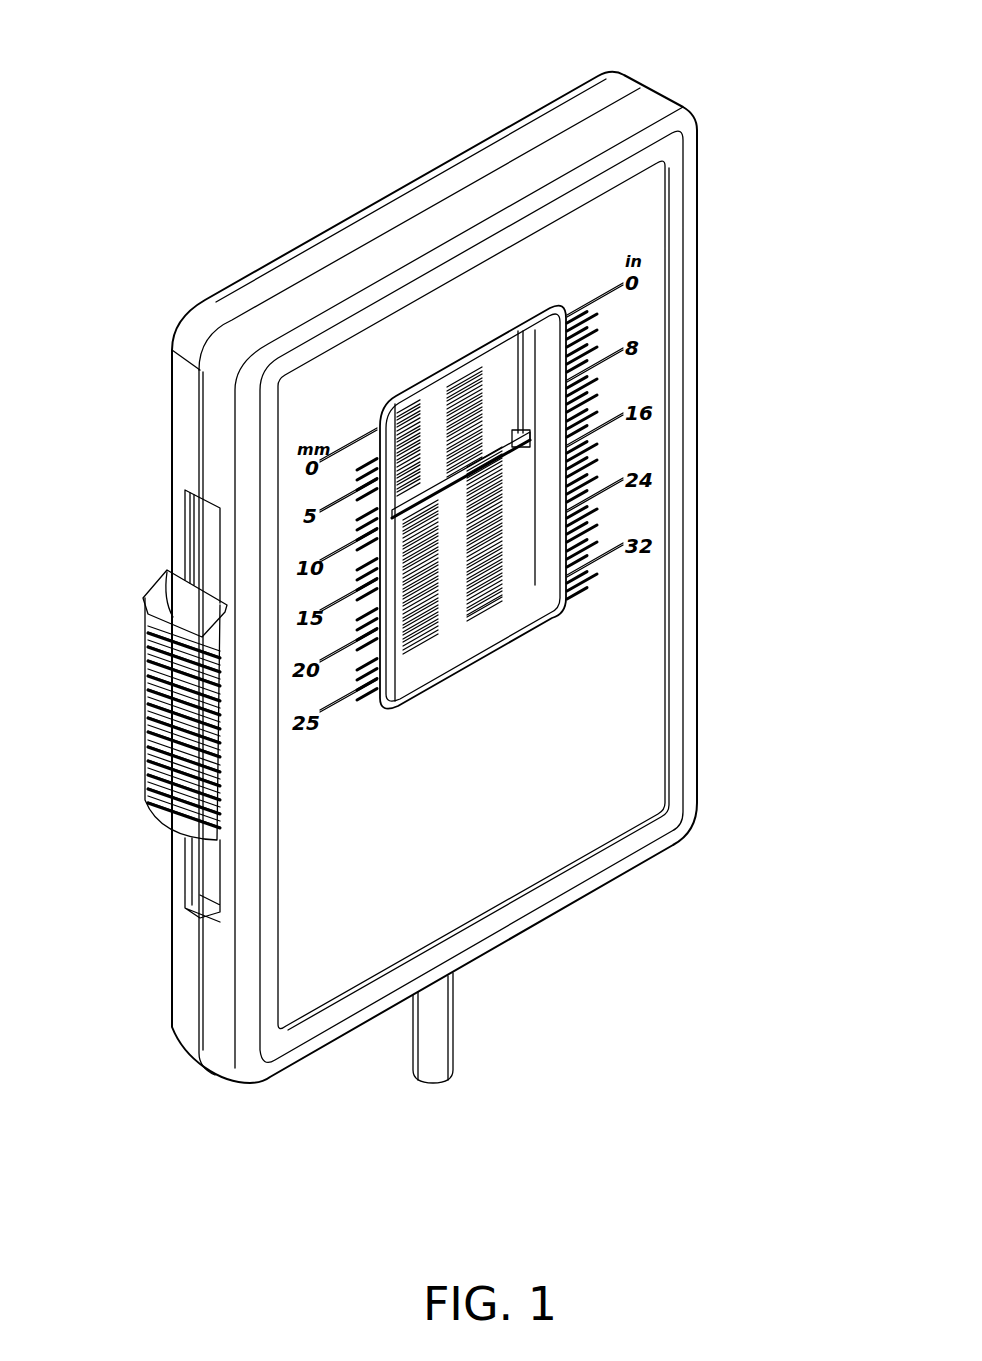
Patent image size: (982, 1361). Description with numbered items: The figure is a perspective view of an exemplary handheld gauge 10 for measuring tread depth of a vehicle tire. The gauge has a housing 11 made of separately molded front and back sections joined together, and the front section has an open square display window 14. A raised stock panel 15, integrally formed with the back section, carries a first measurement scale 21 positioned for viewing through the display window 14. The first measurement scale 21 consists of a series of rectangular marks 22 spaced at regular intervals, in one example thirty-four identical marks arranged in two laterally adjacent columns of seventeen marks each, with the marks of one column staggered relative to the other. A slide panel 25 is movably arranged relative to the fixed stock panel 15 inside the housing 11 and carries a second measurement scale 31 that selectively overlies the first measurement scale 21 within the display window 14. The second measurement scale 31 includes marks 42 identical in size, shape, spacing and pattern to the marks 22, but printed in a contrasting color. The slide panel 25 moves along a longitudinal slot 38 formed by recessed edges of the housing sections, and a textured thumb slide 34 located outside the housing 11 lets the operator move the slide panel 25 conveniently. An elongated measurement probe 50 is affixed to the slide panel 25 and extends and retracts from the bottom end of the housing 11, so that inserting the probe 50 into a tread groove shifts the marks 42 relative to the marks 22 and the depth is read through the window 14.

The handheld gauge 10 is at (815, 120).
The housing 11 is at (637, 720).
The display window 14 is at (540, 577).
The raised stock panel 15 is at (437, 413).
The first measurement scale 21 is at (424, 405).
The rectangular marks 22 is at (484, 388).
The slide panel 25 is at (507, 437).
The second measurement scale 31 is at (453, 622).
The textured thumb slide 34 is at (165, 680).
The longitudinal slot 38 is at (196, 542).
The marks 42 is at (502, 577).
The measurement probe 50 is at (453, 1018).